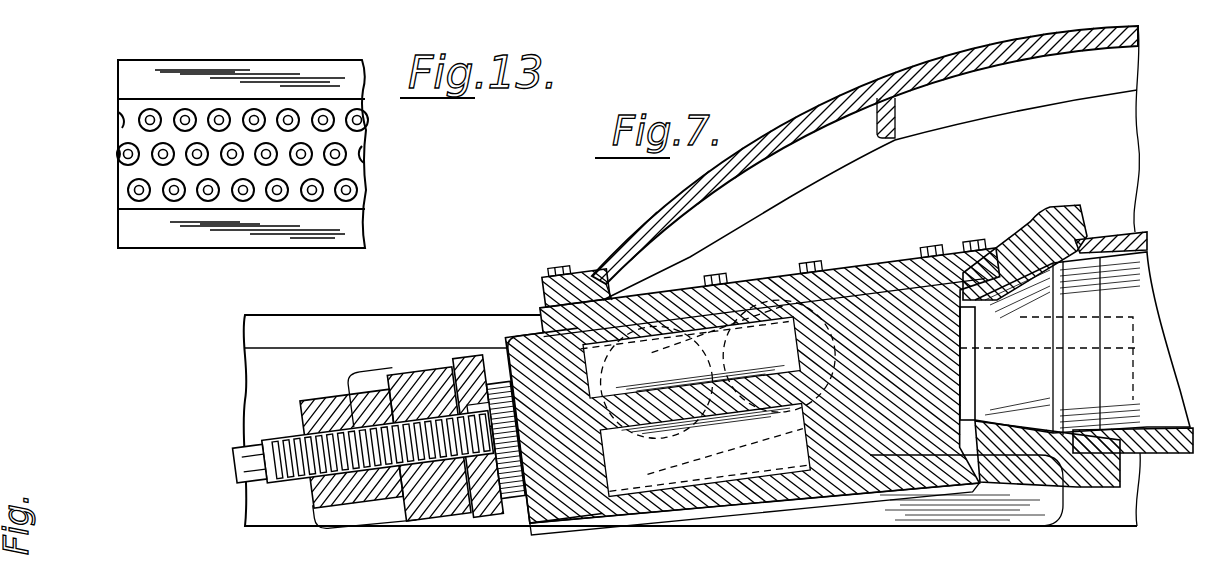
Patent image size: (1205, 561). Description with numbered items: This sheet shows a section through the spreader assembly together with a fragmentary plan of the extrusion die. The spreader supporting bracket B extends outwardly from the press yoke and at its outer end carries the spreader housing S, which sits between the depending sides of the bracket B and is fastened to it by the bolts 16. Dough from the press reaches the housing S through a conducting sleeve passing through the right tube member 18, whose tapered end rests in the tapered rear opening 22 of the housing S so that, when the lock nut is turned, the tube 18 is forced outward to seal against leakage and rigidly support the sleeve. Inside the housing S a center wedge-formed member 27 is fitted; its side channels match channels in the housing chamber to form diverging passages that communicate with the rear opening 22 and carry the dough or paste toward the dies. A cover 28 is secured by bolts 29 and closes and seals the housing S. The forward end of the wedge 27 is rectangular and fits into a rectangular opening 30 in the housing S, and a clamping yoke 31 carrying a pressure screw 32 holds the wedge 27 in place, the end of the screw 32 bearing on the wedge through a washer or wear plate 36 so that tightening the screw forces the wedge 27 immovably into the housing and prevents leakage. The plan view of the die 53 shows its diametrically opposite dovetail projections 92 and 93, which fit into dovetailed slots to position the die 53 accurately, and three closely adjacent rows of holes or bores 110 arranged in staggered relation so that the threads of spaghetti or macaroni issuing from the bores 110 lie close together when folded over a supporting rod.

In FIG. 13, the dovetail projection 92 is at (146, 60).
In FIG. 13, the dovetail projection 93 is at (187, 244).
In FIG. 13, the die 53 is at (365, 201).
In FIG. 13, the holes or bores 110 is at (136, 191).
In FIG. 7, the spreader supporting bracket B is at (925, 66).
In FIG. 7, the spreader housing S is at (1050, 205).
In FIG. 7, the bolts 16 is at (565, 262).
In FIG. 7, the right tube member 18 is at (1145, 237).
In FIG. 7, the rear opening 22 is at (1085, 240).
In FIG. 7, the center wedge-formed member 27 is at (523, 327).
In FIG. 7, the cover 28 is at (890, 301).
In FIG. 7, the bolts 29 is at (808, 268).
In FIG. 7, the rectangular opening 30 is at (573, 500).
In FIG. 7, the clamping yoke 31 is at (330, 510).
In FIG. 7, the pressure screw 32 is at (240, 450).
In FIG. 7, the washer or wear plate 36 is at (520, 486).